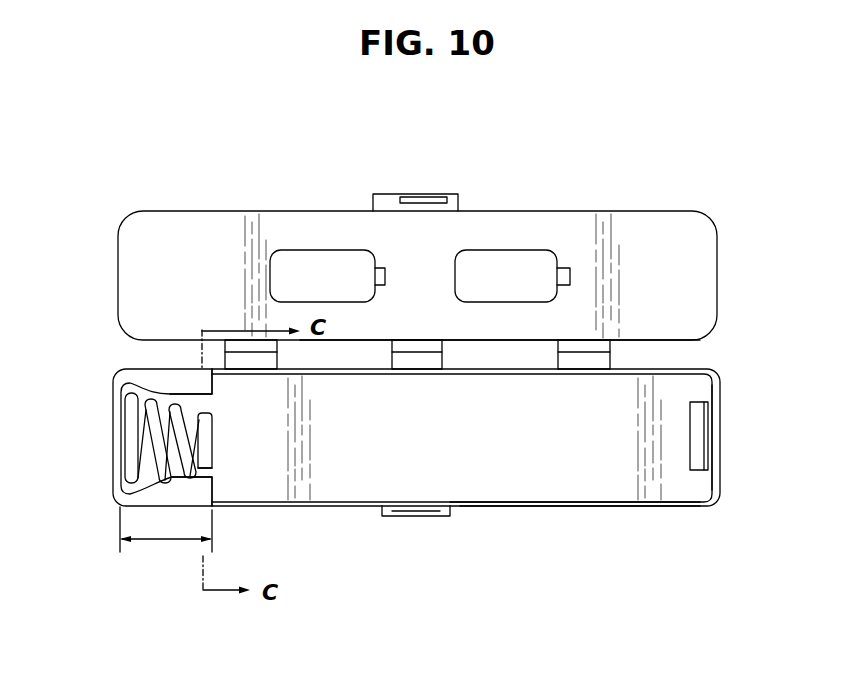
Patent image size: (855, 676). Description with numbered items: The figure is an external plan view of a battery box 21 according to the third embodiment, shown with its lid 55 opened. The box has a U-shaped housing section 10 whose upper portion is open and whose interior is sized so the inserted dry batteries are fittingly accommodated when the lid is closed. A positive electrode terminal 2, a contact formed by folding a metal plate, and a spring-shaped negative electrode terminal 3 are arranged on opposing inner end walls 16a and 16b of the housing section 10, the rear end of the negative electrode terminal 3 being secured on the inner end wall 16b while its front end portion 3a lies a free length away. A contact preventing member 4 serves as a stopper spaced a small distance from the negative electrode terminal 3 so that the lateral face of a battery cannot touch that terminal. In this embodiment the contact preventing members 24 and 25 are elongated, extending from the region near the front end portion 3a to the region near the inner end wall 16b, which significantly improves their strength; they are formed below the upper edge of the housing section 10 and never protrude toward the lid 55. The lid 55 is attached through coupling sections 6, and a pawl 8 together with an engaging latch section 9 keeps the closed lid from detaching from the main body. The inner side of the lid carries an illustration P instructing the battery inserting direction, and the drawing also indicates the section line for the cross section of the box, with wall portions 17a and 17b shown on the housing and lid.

The positive electrode terminal 2 is at (705, 468).
The negative electrode terminal 3 is at (125, 498).
The front end portion of the negative electrode terminal 3a is at (212, 460).
The contact preventing member 4 is at (222, 419).
The coupling sections 6 is at (577, 362).
The pawl 8 is at (415, 194).
The engaging latch section 9 is at (420, 518).
The housing section 10 is at (668, 405).
The inner end wall 16a is at (707, 447).
The inner end wall 16b is at (134, 455).
The lower housing wall 17a is at (518, 508).
The upper housing wall 17b is at (527, 368).
The battery box 21 is at (564, 513).
The contact preventing member 24 is at (199, 390).
The contact preventing member 25 is at (207, 503).
The lid 55 is at (663, 227).
The illustration P is at (377, 257).